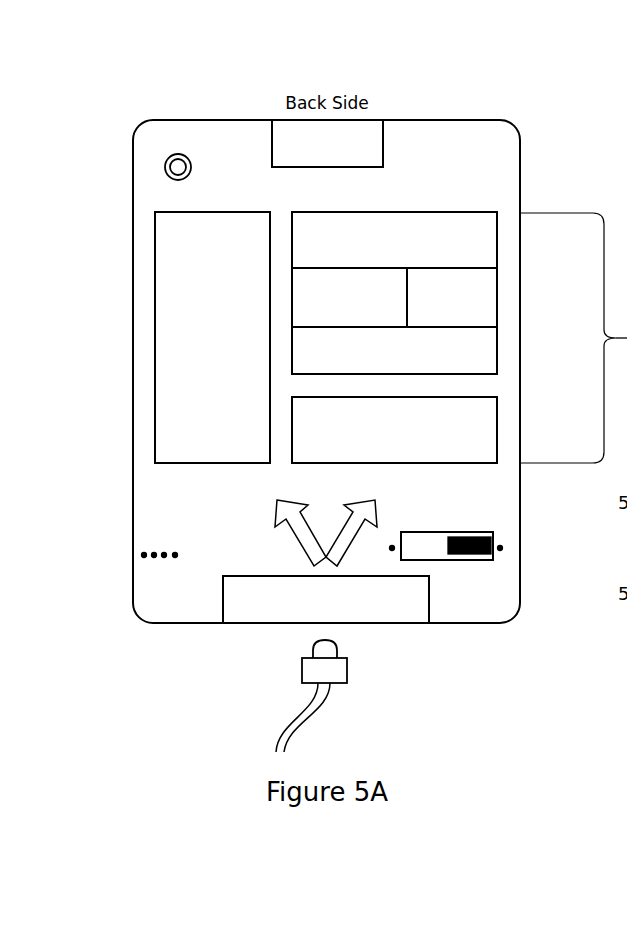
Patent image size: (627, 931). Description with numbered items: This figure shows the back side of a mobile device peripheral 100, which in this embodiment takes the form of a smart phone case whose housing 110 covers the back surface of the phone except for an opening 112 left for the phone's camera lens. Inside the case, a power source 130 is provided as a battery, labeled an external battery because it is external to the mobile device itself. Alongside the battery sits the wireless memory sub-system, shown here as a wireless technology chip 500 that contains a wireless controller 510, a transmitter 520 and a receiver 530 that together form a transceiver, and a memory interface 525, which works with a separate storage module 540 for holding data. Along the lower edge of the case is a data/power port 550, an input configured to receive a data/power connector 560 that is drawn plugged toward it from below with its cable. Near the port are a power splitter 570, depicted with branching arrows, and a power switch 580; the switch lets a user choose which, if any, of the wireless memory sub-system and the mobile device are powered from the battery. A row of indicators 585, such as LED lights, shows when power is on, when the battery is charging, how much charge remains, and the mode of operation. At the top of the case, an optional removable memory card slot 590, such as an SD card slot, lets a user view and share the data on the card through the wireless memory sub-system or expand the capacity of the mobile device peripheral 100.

The mobile device peripheral 100 is at (326, 341).
The housing 110 is at (466, 164).
The opening 112 is at (167, 165).
The power source 130 is at (197, 414).
The wireless technology chip 500 is at (326, 261).
The wireless controller 510 is at (498, 253).
The transmitter 520 is at (292, 305).
The receiver 530 is at (498, 306).
The memory interface 525 is at (498, 352).
The storage module 540 is at (498, 432).
The data/power port 550 is at (429, 605).
The data/power connector 560 is at (347, 670).
The power splitter 570 is at (297, 502).
The power switch 580 is at (504, 548).
The indicators 585 is at (153, 546).
The removable memory card slot 590 is at (272, 147).